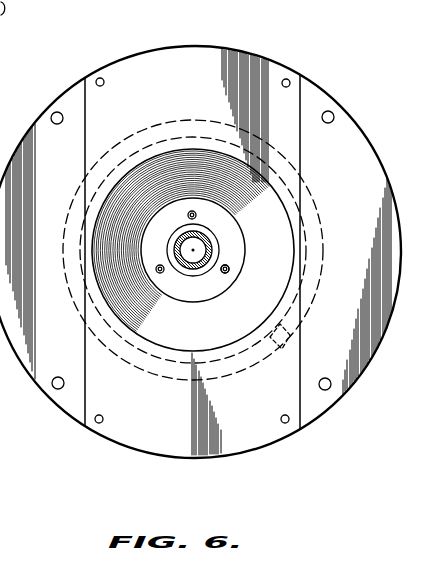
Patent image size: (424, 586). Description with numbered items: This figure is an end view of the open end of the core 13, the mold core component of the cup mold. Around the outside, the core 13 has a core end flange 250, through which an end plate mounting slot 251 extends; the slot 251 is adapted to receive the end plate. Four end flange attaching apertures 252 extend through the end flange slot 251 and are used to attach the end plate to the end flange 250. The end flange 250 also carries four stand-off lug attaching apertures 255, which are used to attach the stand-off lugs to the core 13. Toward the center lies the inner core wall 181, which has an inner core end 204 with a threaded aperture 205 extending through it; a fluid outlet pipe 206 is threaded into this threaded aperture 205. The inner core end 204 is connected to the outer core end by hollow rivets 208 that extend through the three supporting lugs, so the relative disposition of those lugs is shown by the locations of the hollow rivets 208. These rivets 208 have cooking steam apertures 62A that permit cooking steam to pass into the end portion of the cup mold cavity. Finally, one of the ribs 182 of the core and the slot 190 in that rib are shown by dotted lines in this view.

The core 13 is at (317, 72).
The core end flange 250 is at (333, 98).
The end plate mounting slot 251 is at (174, 62).
The end flange attaching apertures 252 is at (98, 78).
The stand-off lug attaching apertures 255 is at (55, 113).
The rib 182 is at (318, 213).
The inner core wall 181 is at (173, 338).
The slot 190 is at (272, 356).
The inner core end 204 is at (230, 252).
The threaded aperture 205 is at (206, 270).
The fluid outlet pipe 206 is at (205, 242).
The hollow rivets 208 is at (222, 277).
The cooking steam apertures 62A is at (229, 270).